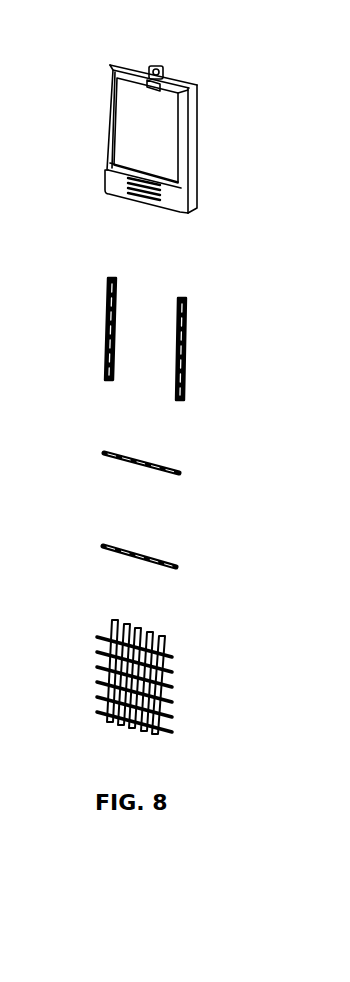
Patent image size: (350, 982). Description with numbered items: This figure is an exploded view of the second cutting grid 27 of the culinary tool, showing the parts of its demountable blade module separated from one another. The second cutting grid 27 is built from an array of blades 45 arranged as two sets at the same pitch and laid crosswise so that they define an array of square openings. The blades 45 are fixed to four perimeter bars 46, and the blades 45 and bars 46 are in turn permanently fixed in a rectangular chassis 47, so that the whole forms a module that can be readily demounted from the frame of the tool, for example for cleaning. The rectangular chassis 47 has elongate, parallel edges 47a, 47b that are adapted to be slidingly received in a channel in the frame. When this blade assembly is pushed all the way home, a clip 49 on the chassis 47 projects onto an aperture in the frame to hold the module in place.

The second cutting grid 27 is at (163, 119).
The rectangular chassis 47 is at (178, 182).
The elongate parallel edge 47a is at (193, 115).
The elongate parallel edge 47b is at (112, 116).
The clip 49 is at (158, 66).
The perimeter bars 46 is at (197, 452).
The blades 45 is at (173, 668).